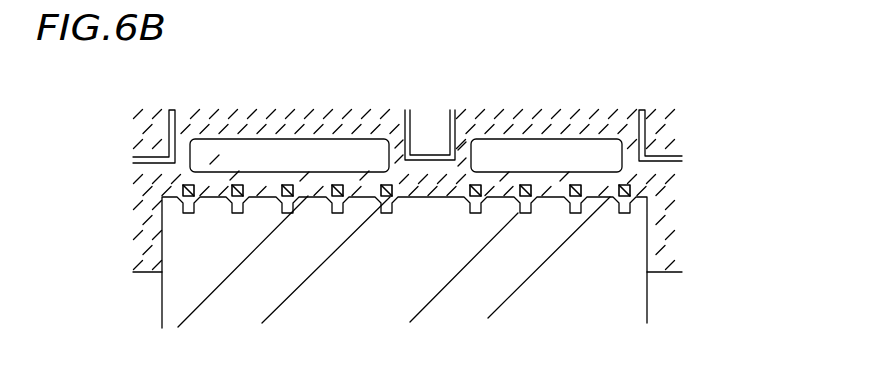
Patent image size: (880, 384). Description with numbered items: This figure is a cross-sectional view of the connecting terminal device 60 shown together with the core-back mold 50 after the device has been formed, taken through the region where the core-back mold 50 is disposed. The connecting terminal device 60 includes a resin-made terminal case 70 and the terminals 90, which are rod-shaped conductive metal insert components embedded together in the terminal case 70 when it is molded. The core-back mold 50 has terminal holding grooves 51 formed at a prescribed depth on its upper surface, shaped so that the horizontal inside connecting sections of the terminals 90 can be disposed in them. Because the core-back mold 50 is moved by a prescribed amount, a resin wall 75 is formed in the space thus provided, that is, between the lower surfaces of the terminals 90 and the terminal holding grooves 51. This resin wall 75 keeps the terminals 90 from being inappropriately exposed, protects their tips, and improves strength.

The core-back mold 50 is at (635, 295).
The terminal holding grooves 51 is at (242, 214).
The connecting terminal device 60 is at (662, 90).
The terminal case 70 is at (168, 112).
The resin wall 75 is at (233, 214).
The terminals 90 is at (283, 173).